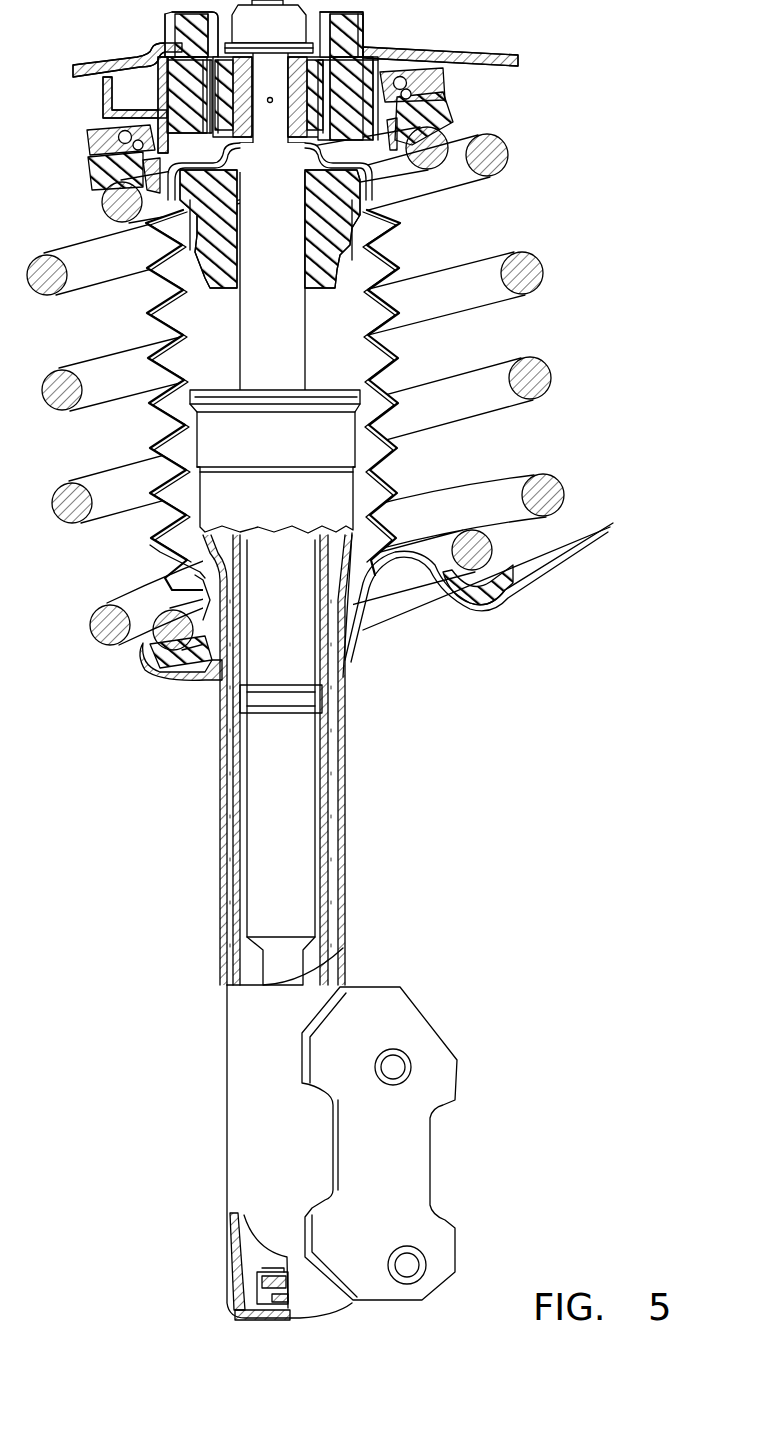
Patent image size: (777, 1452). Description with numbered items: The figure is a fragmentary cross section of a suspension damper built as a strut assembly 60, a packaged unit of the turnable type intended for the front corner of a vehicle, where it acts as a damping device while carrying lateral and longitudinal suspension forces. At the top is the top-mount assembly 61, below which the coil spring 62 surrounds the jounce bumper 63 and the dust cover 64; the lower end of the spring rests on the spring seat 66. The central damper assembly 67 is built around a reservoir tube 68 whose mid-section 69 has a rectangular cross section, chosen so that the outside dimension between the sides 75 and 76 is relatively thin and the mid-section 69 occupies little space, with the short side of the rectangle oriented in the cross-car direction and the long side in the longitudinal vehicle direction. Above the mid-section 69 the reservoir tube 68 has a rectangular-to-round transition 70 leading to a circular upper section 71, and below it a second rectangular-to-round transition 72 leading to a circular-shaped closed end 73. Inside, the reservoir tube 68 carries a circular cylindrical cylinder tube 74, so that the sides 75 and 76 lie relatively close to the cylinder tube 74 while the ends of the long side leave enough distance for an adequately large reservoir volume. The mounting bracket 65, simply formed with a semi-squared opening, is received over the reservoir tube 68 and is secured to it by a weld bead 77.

The strut assembly 60 is at (360, 708).
The top-mount assembly 61 is at (393, 47).
The coil spring 62 is at (523, 272).
The jounce bumper 63 is at (345, 232).
The dust cover 64 is at (395, 262).
The mounting bracket 65 is at (418, 1012).
The spring seat 66 is at (555, 578).
The damper assembly 67 is at (352, 783).
The reservoir tube 68 is at (345, 752).
The mid-section 69 is at (343, 822).
The rectangular-to-round transition 70 is at (215, 600).
The circular upper section 71 is at (195, 560).
The rectangular-to-round transition 72 is at (237, 1310).
The circular-shaped closed end 73 is at (263, 1325).
The cylinder tube 74 is at (330, 893).
The side 75 is at (345, 857).
The side 76 is at (227, 880).
The weld bead 77 is at (340, 993).